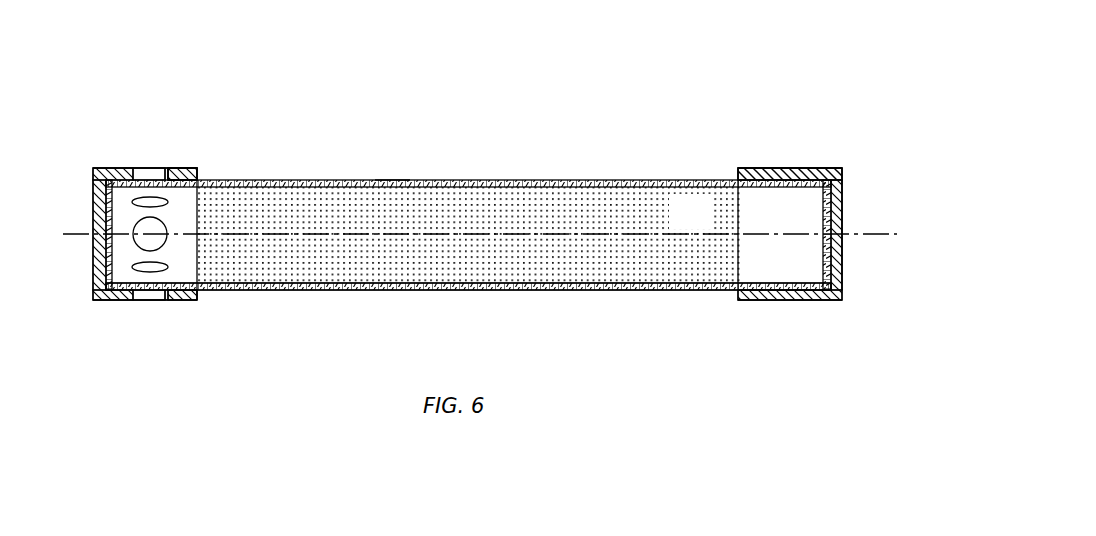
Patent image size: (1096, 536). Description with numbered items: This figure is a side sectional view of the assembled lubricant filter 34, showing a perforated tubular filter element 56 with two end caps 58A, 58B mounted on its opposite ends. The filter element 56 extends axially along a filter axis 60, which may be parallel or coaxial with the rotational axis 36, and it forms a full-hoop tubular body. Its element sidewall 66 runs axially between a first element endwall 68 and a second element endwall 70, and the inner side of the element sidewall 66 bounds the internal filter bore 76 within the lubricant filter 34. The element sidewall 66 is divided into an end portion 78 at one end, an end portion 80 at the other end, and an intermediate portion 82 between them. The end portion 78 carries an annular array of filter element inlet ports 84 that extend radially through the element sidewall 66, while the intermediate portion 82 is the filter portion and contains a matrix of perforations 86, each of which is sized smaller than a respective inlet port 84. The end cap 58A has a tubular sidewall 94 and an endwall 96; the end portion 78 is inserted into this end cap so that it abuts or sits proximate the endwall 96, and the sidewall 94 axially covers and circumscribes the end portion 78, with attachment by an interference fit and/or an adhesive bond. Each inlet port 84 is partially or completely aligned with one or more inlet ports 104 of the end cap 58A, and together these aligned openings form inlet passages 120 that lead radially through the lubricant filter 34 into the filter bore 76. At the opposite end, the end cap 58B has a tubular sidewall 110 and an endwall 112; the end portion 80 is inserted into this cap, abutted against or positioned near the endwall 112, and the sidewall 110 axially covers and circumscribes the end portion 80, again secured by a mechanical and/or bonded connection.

The lubricant filter 34 is at (748, 90).
The rotational axis 36 is at (506, 188).
The filter axis 60 is at (882, 232).
The filter element 56 is at (573, 175).
The end cap 58A is at (435, 223).
The end cap 58B is at (812, 226).
The element sidewall 66 is at (183, 168).
The first element endwall 68 is at (98, 197).
The second element endwall 70 is at (830, 267).
The filter bore 76 is at (704, 223).
The end portion 78 is at (185, 300).
The end portion 80 is at (753, 293).
The intermediate portion 82 is at (317, 291).
The filter element inlet ports 84 is at (160, 167).
The perforations 86 is at (408, 178).
The tubular sidewall 94 is at (110, 302).
The endwall 96 is at (108, 245).
The inlet ports 104 is at (153, 168).
The tubular sidewall 110 is at (797, 303).
The endwall 112 is at (843, 195).
The inlet passages 120 is at (143, 167).